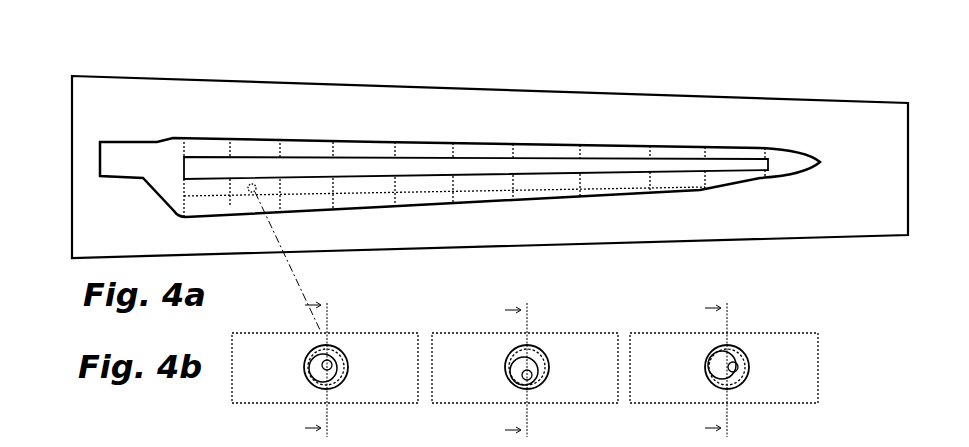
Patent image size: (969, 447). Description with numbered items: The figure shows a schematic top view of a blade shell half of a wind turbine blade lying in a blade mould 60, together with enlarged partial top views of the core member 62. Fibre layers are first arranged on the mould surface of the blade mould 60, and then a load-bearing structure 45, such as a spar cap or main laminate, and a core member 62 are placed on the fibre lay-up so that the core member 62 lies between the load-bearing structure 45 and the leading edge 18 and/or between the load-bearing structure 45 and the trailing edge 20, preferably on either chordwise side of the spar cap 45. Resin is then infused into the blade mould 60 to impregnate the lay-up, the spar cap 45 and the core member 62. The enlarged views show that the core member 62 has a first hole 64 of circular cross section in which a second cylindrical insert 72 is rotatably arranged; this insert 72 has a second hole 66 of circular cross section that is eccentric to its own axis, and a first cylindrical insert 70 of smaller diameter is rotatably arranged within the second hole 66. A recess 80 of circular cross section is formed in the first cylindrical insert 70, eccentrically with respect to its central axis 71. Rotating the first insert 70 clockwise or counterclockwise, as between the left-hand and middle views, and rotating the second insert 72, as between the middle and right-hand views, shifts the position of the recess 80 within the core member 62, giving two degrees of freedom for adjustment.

In FIG. 4A, the blade mould 60 is at (382, 113).
In FIG. 4A, the leading edge 18 is at (505, 142).
In FIG. 4A, the load-bearing structure 45 is at (615, 166).
In FIG. 4A, the core member 62 is at (236, 188).
In FIG. 4B, the core member 62 is at (378, 353).
In FIG. 4A, the trailing edge 20 is at (490, 205).
In FIG. 4B, the first hole 64 is at (342, 378).
In FIG. 4B, the second hole 66 is at (310, 382).
In FIG. 4B, the second cylindrical insert 72 is at (348, 363).
In FIG. 4B, the first cylindrical insert 70 is at (340, 358).
In FIG. 4B, the recess 80 is at (310, 365).
In FIG. 4B, the central axis 71 is at (800, 442).